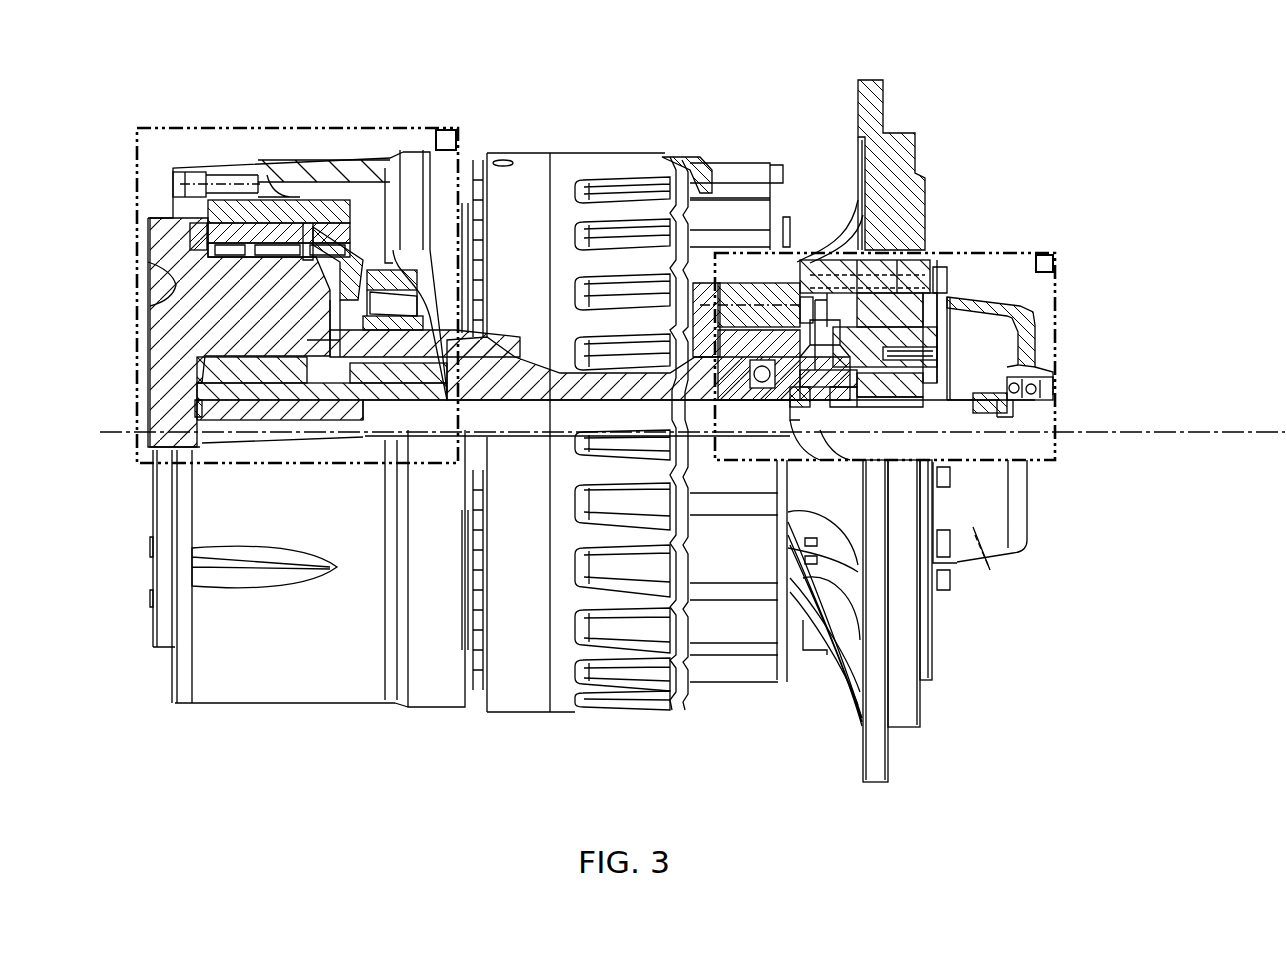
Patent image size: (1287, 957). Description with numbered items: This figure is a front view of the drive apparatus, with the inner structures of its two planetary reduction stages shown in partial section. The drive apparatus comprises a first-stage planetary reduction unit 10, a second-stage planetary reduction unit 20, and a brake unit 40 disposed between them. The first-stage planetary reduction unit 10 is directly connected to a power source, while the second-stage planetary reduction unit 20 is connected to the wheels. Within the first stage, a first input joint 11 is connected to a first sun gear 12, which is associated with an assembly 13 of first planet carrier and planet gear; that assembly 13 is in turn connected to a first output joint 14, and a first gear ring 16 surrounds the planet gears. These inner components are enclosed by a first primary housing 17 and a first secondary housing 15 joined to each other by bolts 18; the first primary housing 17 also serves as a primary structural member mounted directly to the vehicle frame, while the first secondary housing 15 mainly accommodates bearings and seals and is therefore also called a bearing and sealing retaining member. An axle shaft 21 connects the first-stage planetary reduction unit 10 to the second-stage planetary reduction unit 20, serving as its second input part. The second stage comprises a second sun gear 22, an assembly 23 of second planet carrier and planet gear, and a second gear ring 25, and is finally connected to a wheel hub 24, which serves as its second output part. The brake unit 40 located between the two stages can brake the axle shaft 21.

The first-stage planetary reduction unit 10 is at (967, 250).
The first input joint 11 is at (1018, 323).
The first sun gear 12 is at (975, 387).
The assembly of first planet carrier and planet gear 13 is at (890, 265).
The first output joint 14 is at (785, 378).
The first secondary housing 15 is at (1048, 363).
The first gear ring 16 is at (912, 262).
The first primary housing 17 is at (893, 135).
The bolts 18 is at (940, 270).
The second-stage planetary reduction unit 20 is at (352, 126).
The axle shaft 21 is at (445, 352).
The second sun gear 22 is at (330, 385).
The assembly of second planet carrier and planet gear 23 is at (158, 217).
The wheel hub 24 is at (197, 165).
The second gear ring 25 is at (257, 182).
The brake unit 40 is at (612, 148).